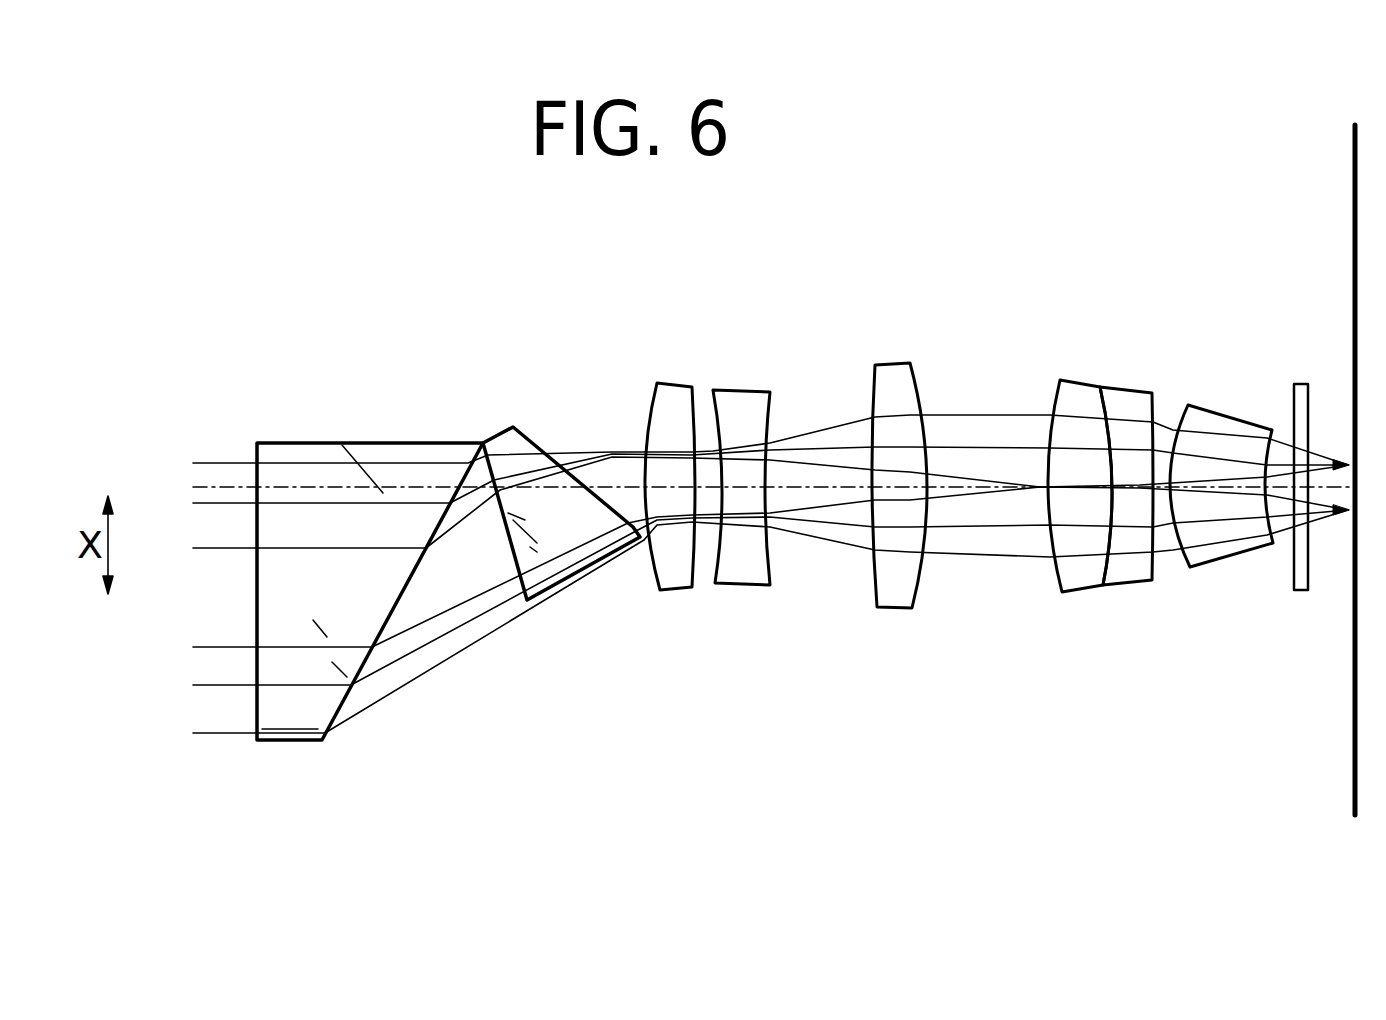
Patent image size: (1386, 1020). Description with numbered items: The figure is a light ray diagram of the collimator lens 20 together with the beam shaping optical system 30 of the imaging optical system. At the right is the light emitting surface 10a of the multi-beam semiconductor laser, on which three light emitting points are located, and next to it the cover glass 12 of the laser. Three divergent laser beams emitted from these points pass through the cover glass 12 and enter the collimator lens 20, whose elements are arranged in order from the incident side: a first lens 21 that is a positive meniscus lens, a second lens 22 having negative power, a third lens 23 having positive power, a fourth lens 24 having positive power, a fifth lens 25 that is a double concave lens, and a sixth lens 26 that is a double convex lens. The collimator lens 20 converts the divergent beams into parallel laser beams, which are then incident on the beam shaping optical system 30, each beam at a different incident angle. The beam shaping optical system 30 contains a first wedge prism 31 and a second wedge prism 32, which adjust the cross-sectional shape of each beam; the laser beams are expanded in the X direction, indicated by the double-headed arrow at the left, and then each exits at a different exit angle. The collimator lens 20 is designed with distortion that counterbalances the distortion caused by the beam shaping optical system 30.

The light emitting surface 10a is at (1352, 812).
The cover glass 12 is at (1300, 591).
The collimator lens 20 is at (959, 553).
The first lens 21 is at (1221, 540).
The second lens 22 is at (1128, 586).
The third lens 23 is at (1080, 594).
The fourth lens 24 is at (895, 609).
The fifth lens 25 is at (742, 587).
The sixth lens 26 is at (672, 592).
The beam shaping optical system 30 is at (448, 621).
The first wedge prism 31 is at (561, 551).
The second wedge prism 32 is at (290, 743).